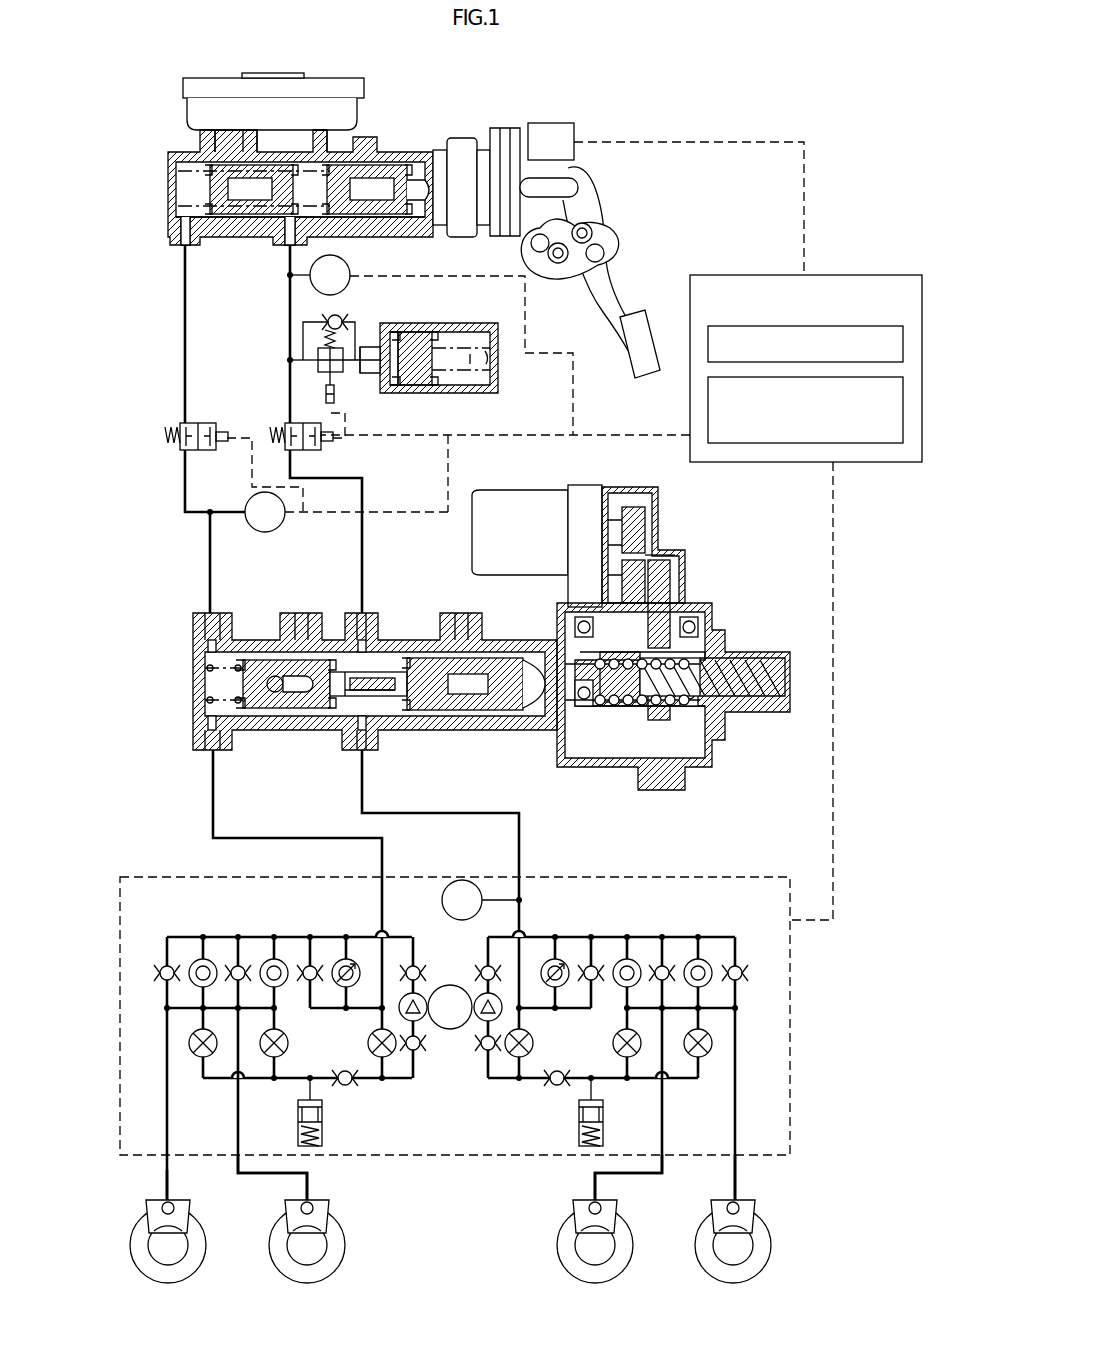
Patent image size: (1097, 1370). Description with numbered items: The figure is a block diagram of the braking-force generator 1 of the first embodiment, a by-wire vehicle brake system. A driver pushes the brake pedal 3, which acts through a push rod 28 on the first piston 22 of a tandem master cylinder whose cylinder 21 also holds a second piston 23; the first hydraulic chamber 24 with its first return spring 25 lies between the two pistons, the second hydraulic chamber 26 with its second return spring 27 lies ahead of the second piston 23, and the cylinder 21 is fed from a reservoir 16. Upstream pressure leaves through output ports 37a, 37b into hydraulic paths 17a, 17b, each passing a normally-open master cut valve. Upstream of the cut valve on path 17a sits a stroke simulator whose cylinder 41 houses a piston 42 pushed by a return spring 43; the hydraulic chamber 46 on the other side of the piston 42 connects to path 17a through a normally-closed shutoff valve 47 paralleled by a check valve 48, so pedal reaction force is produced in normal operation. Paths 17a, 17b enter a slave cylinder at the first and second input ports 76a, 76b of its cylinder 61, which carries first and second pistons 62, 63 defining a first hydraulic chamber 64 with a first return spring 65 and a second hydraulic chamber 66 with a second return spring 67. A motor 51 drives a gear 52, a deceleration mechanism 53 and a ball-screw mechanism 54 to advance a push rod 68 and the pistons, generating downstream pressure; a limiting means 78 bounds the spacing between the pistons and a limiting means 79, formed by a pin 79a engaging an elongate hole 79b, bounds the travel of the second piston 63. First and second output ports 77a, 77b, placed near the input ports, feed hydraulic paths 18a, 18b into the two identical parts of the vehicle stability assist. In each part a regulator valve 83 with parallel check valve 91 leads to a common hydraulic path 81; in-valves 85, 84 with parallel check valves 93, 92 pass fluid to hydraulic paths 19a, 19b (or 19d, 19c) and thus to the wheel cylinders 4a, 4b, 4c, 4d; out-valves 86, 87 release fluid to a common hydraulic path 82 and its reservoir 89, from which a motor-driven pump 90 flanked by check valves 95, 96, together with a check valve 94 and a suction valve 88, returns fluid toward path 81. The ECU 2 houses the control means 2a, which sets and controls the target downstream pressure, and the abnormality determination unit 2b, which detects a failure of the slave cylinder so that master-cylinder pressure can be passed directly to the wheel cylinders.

The braking-force generator 1 is at (710, 91).
The ECU 2 is at (760, 275).
The control means 2a is at (850, 326).
The abnormality determination unit 2b is at (790, 443).
The brake pedal 3 is at (645, 330).
The wheel cylinder 4a is at (703, 1212).
The wheel cylinder 4b is at (565, 1212).
The wheel cylinder 4c is at (342, 1210).
The wheel cylinder 4d is at (202, 1210).
The reservoir 16 is at (195, 110).
The hydraulic path 17a is at (290, 385).
The hydraulic path 17b is at (185, 335).
The hydraulic path 18a is at (528, 845).
The hydraulic path 18b is at (285, 838).
The hydraulic path 19a is at (732, 1188).
The hydraulic path 19b is at (595, 1190).
The hydraulic path 19c is at (310, 1173).
The hydraulic path 19d is at (165, 1180).
The cylinder 21 is at (385, 152).
The first piston 22 is at (386, 201).
The second piston 23 is at (264, 201).
The first hydraulic chamber 24 is at (320, 165).
The first return spring 25 is at (345, 230).
The second hydraulic chamber 26 is at (195, 172).
The second return spring 27 is at (185, 195).
The push rod 28 is at (430, 188).
The output port 37a is at (300, 232).
The output port 37b is at (175, 232).
The cylinder 41 is at (478, 393).
The piston 42 is at (415, 385).
The return spring 43 is at (488, 372).
The hydraulic chamber 46 is at (392, 385).
The shutoff valve (PFSV) 47 is at (343, 375).
The check valve 48 is at (345, 320).
The motor 51 is at (530, 490).
The gear 52 is at (648, 522).
The deceleration mechanism 53 is at (665, 562).
The ball-screw mechanism 54 is at (732, 612).
The cylinder 61 is at (540, 752).
The first piston 62 is at (483, 696).
The second piston 63 is at (318, 660).
The first hydraulic chamber 64 is at (385, 662).
The first return spring 65 is at (415, 716).
The second hydraulic chamber 66 is at (215, 660).
The second return spring 67 is at (215, 705).
The push rod 68 is at (760, 675).
The first input port 76a is at (368, 628).
The second input port 76b is at (200, 630).
The first output port 77a is at (362, 752).
The second output port 77b is at (200, 750).
The limiting means 78 is at (490, 730).
The limiting means 79 is at (275, 692).
The pin 79a is at (268, 686).
The elongate hole 79b is at (292, 700).
The hydraulic path 81 is at (238, 937).
The hydraulic path 82 is at (250, 1078).
The regulator valve 83 is at (346, 958).
The in-valve 84 is at (275, 958).
The in-valve 85 is at (203, 959).
The out-valve 86 is at (198, 1057).
The out-valve 87 is at (285, 1050).
The suction valve 88 is at (370, 1040).
The reservoir 89 is at (322, 1138).
The pump 90 is at (470, 1025).
The check valve 91 is at (310, 965).
The check valve 92 is at (238, 965).
The check valve 93 is at (160, 968).
The check valve 94 is at (348, 1086).
The check valve 95 is at (470, 1060).
The check valve 96 is at (470, 968).